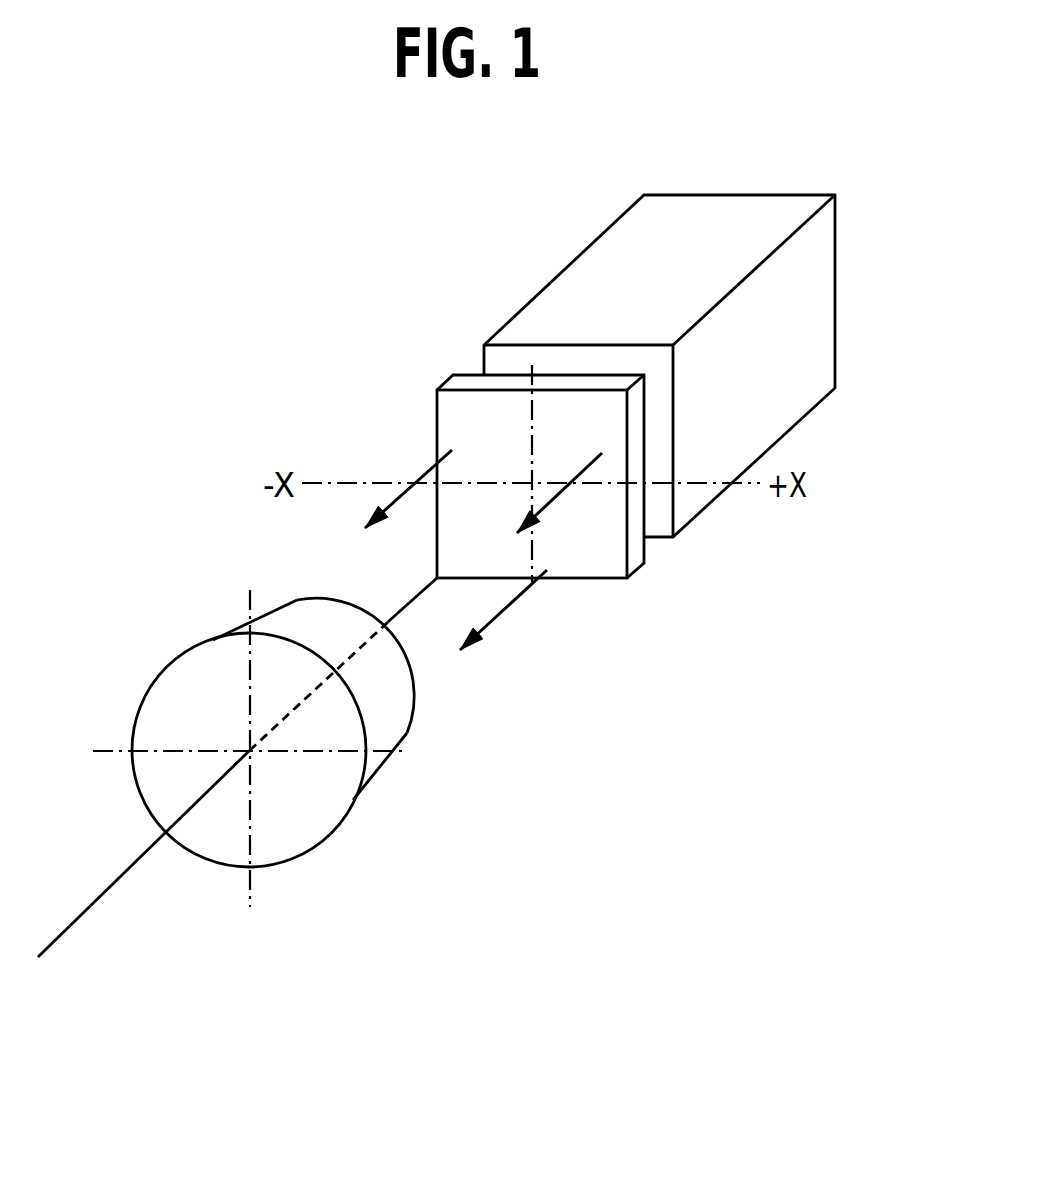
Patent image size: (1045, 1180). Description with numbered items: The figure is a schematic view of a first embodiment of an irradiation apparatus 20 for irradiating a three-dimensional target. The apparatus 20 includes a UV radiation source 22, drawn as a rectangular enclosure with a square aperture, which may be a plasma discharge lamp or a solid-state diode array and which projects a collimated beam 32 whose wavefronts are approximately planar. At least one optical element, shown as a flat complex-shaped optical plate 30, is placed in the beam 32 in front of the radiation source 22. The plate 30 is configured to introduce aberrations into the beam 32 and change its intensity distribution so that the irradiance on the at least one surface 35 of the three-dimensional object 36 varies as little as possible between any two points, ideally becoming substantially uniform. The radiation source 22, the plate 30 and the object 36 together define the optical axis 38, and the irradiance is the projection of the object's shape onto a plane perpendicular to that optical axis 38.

The irradiation apparatus 20 is at (766, 171).
The UV radiation source 22 is at (817, 300).
The complex-shaped optical plate 30 is at (638, 503).
The beam 32 is at (427, 470).
The surface of the 3D object 35 is at (415, 680).
The 3D object 36 is at (198, 586).
The optical axis 38 is at (123, 880).